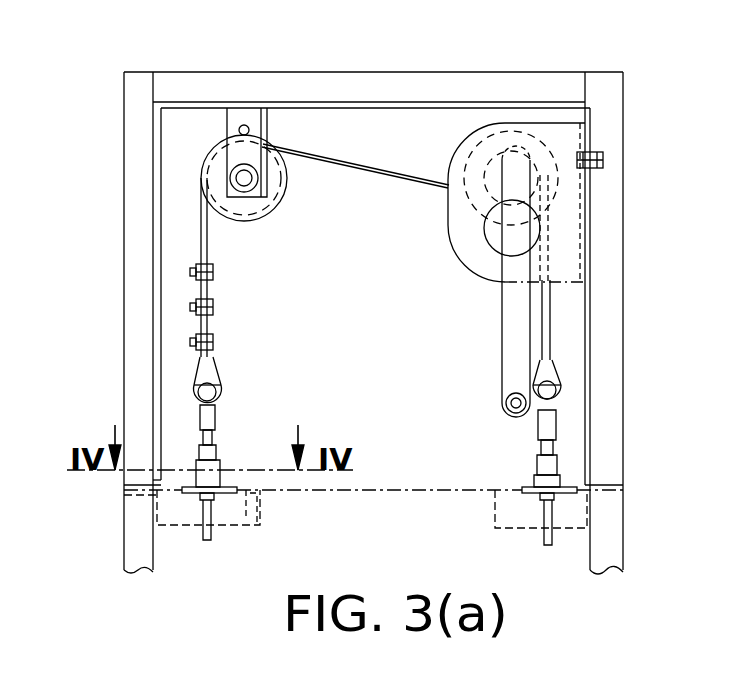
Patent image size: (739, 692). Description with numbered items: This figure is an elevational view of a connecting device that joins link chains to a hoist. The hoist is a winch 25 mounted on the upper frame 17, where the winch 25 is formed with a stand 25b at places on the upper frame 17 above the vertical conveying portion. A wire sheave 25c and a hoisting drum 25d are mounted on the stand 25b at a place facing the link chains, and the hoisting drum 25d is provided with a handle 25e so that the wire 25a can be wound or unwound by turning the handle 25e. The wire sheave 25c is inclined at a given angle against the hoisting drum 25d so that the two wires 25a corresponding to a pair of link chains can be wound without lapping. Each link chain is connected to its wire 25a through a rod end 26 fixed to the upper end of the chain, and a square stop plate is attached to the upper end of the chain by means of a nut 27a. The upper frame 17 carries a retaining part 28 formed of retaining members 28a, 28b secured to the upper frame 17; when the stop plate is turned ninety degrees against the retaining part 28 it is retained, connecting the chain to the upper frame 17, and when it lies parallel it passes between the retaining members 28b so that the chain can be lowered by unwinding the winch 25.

The winch 25 is at (433, 68).
The wire 25a is at (410, 178).
The stand 25b is at (137, 188).
The wire sheave 25c is at (278, 190).
The hoisting drum 25d is at (468, 158).
The handle 25e is at (502, 330).
The rod end 26 is at (212, 425).
The nut 27a is at (200, 462).
The retaining part 28 is at (246, 488).
The retaining member 28a is at (160, 500).
The retaining member 28b is at (258, 520).
The upper frame 17 is at (373, 486).